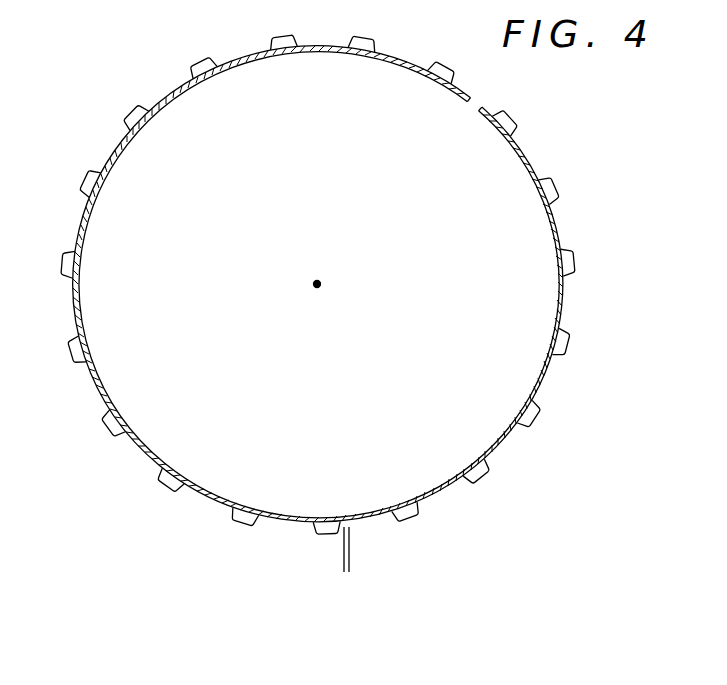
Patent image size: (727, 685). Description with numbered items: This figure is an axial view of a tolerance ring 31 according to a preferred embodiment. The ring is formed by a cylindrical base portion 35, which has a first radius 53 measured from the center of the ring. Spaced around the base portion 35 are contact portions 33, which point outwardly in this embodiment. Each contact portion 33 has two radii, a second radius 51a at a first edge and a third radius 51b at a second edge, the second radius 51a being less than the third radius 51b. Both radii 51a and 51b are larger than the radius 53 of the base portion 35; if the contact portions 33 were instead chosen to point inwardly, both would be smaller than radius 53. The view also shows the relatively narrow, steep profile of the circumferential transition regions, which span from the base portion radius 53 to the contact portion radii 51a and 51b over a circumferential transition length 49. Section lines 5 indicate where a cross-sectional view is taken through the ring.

The tolerance ring 31 is at (478, 102).
The contact portions 33 is at (188, 62).
The cylindrical base portion 35 is at (433, 25).
The circumferential transition length 49 is at (305, 555).
The second radius 51a is at (317, 284).
The third radius 51b is at (65, 264).
The first radius 53 is at (317, 284).
The section line 5- 5 is at (515, 113).